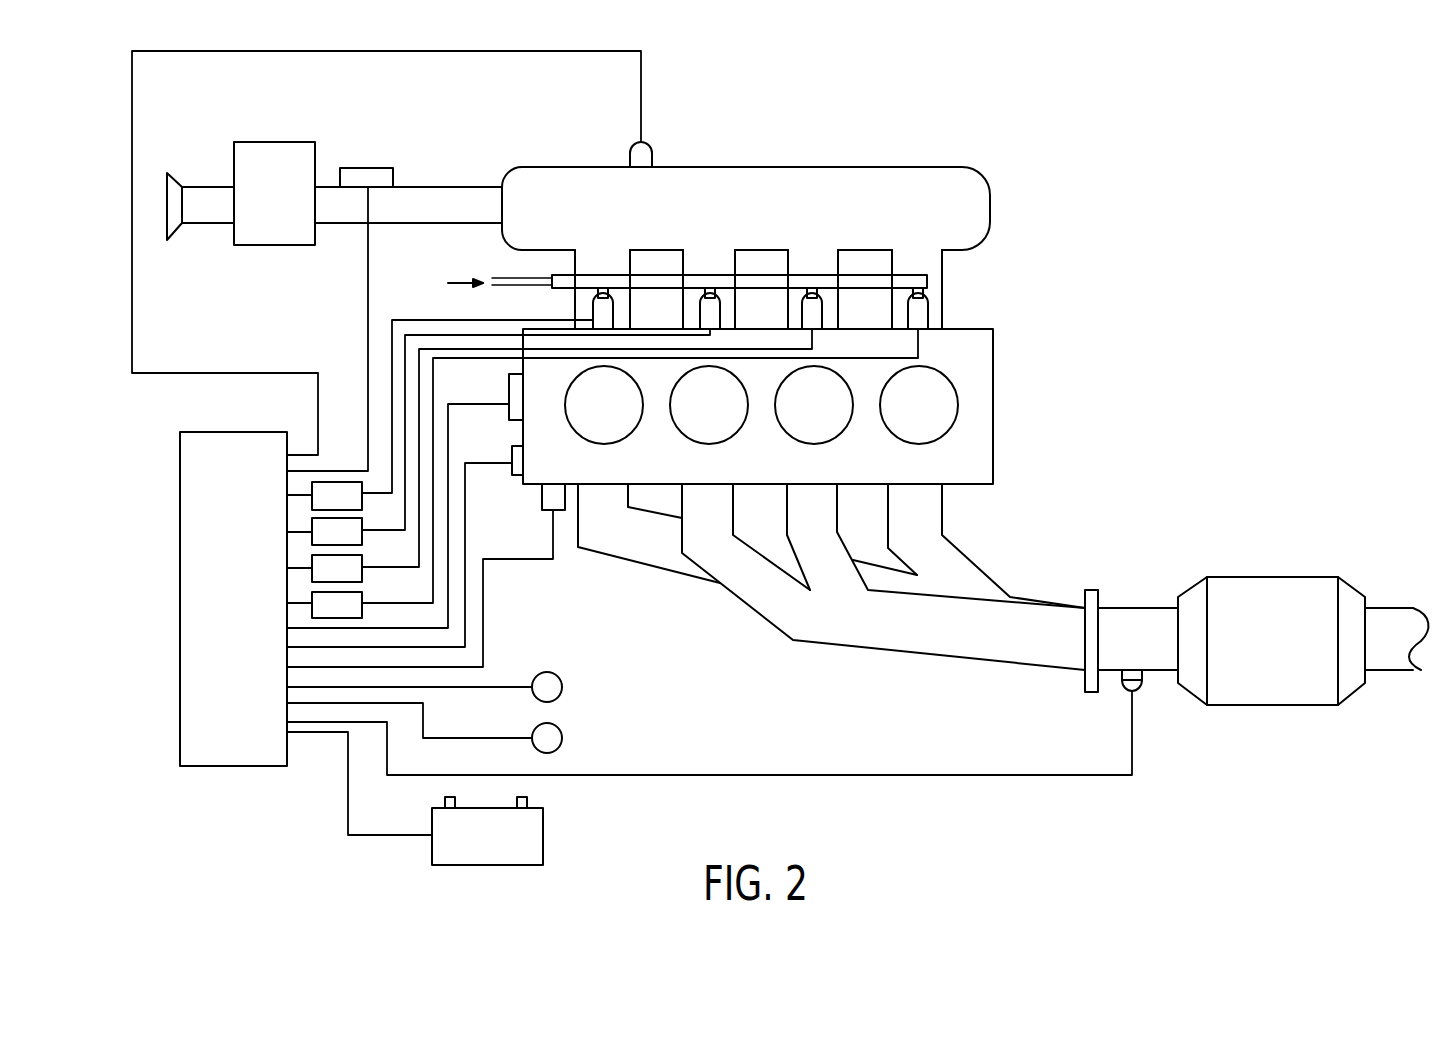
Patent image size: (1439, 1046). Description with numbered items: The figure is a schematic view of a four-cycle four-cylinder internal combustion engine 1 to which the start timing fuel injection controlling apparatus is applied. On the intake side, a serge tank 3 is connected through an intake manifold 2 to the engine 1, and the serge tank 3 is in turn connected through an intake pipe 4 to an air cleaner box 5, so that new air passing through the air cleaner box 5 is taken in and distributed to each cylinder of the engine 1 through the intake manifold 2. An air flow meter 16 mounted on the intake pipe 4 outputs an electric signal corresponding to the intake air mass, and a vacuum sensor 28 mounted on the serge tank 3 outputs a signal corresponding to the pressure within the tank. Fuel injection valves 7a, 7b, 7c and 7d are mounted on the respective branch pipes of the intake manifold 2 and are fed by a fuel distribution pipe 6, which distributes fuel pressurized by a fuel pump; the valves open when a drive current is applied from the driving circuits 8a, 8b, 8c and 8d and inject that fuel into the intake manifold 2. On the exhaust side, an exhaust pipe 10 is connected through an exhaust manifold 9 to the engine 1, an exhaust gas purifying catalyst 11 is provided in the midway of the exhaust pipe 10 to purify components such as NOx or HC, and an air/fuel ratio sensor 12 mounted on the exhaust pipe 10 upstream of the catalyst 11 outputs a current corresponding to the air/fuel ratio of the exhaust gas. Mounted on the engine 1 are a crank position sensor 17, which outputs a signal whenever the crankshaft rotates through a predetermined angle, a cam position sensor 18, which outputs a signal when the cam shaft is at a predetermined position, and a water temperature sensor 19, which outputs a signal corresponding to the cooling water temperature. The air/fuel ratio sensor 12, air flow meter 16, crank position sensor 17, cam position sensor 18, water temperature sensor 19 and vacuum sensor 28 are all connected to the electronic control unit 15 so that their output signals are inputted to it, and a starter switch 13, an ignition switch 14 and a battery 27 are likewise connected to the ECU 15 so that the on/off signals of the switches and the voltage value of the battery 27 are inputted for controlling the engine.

The internal combustion engine 1 is at (993, 403).
The intake manifold 2 is at (920, 260).
The serge tank 3 is at (925, 177).
The intake pipe 4 is at (445, 198).
The air cleaner box 5 is at (275, 165).
The fuel distribution pipe 6 is at (927, 282).
The fuel injection valve 7a is at (613, 315).
The fuel injection valve 7b is at (720, 315).
The fuel injection valve 7c is at (822, 315).
The fuel injection valve 7d is at (928, 313).
The driving circuit 8a is at (333, 487).
The driving circuit 8b is at (357, 527).
The driving circuit 8c is at (358, 562).
The driving circuit 8d is at (358, 597).
The exhaust manifold 9 is at (752, 593).
The exhaust pipe 10 is at (1130, 613).
The exhaust gas purifying catalyst 11 is at (1253, 590).
The air/fuel ratio sensor 12 is at (1143, 682).
The starter switch 13 is at (547, 672).
The ignition switch 14 is at (538, 735).
The electronic control unit (ECU) 15 is at (233, 755).
The air flow meter 16 is at (360, 178).
The crank position sensor 17 is at (509, 388).
The cam position sensor 18 is at (512, 453).
The water temperature sensor 19 is at (542, 490).
The battery 27 is at (535, 843).
The vacuum sensor 28 is at (652, 147).